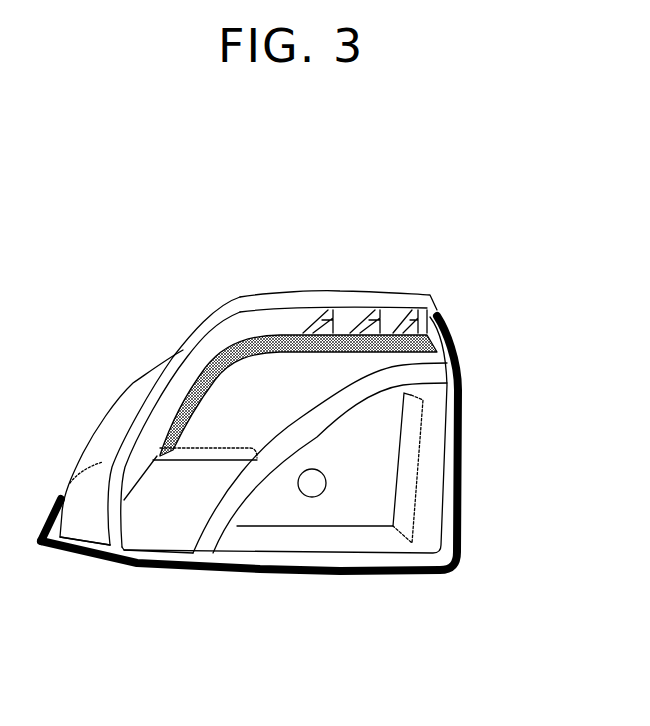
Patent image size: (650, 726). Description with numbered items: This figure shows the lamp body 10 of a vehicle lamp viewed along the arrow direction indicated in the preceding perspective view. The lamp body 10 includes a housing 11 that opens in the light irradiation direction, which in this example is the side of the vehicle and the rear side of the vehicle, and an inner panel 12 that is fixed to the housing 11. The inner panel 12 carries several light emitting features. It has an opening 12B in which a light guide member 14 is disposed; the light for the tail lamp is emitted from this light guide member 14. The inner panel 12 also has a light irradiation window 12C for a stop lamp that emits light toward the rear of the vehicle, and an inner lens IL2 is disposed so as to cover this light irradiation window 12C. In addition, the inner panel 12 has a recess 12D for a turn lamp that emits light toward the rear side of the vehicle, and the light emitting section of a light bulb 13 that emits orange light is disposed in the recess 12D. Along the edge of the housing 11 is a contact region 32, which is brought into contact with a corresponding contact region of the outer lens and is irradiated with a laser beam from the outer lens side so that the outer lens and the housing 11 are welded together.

The lamp body 10 is at (355, 119).
The housing 11 is at (468, 407).
The inner panel 12 is at (267, 296).
The opening 12B is at (293, 333).
The light irradiation window 12C is at (170, 503).
The recess 12D is at (387, 487).
The light bulb 13 is at (317, 488).
The light guide member 14 is at (440, 332).
The contact region 32 is at (463, 520).
The inner lens IL2 is at (147, 523).